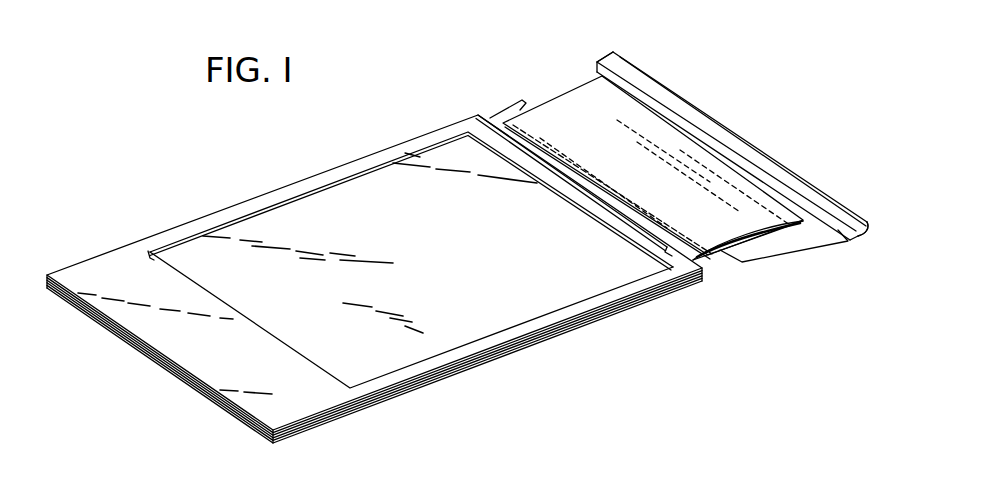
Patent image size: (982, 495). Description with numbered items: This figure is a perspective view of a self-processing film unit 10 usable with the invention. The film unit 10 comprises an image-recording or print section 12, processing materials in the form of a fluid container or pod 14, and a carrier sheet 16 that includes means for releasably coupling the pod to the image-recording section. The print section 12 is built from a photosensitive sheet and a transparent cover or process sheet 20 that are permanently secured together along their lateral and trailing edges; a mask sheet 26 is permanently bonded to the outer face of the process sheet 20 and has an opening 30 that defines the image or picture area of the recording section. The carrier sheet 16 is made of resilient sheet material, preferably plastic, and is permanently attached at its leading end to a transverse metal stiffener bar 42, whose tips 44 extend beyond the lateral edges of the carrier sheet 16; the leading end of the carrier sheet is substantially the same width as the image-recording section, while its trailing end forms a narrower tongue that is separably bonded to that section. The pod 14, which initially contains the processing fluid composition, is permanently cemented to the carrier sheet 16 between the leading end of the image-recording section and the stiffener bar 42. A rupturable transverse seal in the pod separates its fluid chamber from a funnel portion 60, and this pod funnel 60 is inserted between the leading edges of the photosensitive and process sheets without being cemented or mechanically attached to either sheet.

The film unit 10 is at (199, 209).
The image-recording or print section 12 is at (334, 166).
The fluid container or pod 14 is at (558, 116).
The carrier sheet 16 is at (770, 242).
The transparent cover or process sheet 20 is at (300, 238).
The mask sheet 26 is at (115, 281).
The opening 30 is at (414, 155).
The transverse metal stiffener bar 42 is at (740, 137).
The tips of the stiffener bar 44 is at (610, 53).
The funnel portion of the pod 60 is at (678, 254).